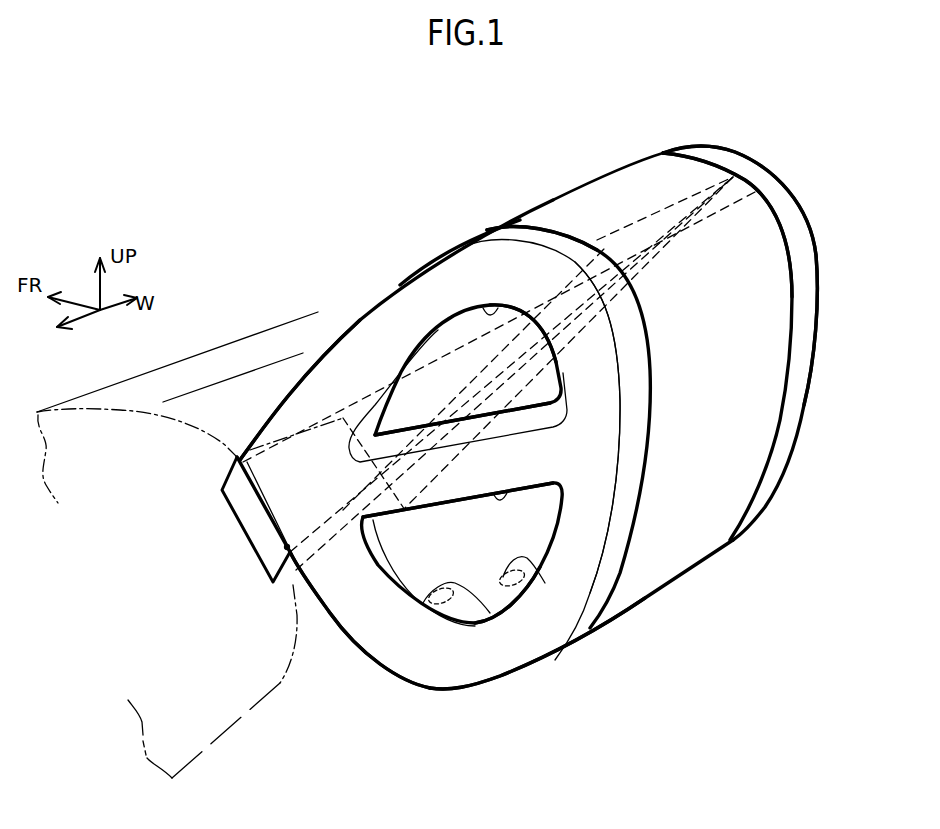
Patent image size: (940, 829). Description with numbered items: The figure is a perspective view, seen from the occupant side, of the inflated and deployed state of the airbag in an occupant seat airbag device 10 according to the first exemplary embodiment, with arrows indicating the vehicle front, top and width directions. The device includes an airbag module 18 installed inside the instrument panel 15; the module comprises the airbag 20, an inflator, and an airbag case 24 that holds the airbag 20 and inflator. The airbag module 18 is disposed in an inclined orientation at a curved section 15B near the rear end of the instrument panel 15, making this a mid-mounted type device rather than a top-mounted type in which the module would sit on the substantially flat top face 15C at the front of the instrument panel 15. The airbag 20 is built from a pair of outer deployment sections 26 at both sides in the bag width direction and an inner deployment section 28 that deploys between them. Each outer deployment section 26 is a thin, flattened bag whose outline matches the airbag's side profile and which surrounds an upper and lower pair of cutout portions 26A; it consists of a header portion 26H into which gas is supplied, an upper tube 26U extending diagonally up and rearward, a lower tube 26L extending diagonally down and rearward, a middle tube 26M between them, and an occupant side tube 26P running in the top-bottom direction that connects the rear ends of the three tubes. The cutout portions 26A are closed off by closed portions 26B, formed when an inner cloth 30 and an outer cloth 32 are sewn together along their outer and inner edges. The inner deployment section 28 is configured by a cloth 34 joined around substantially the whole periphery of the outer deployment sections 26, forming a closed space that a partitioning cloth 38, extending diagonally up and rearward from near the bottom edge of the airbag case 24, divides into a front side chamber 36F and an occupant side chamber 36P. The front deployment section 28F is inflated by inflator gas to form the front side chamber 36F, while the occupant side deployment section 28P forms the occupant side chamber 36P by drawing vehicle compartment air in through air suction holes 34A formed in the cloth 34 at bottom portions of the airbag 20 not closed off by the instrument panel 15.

The occupant seat airbag device 10 is at (583, 389).
The instrument panel 15 is at (195, 386).
The curved section 15B is at (243, 412).
The top face 15C is at (133, 396).
The airbag module 18 is at (219, 538).
The airbag 20 is at (583, 389).
The airbag case 24 is at (265, 542).
The outer deployment sections 26 is at (802, 309).
The cutout portions 26A is at (490, 306).
The closed portions 26B is at (562, 383).
The header portion 26H is at (327, 470).
The lower tube 26L is at (487, 665).
The middle tube 26M is at (468, 487).
The occupant side tube 26P is at (600, 447).
The upper tube 26U is at (441, 260).
The inner deployment section 28 is at (797, 353).
The front deployment section 28F is at (688, 185).
The occupant side deployment section 28P is at (748, 225).
The inner cloth 30 is at (398, 546).
The outer cloth 32 is at (342, 600).
The cloth 34 is at (637, 190).
The air suction holes 34A is at (534, 590).
The front side chamber 36F is at (688, 185).
The occupant side chamber 36P is at (769, 183).
The partitioning cloth 38 is at (612, 250).